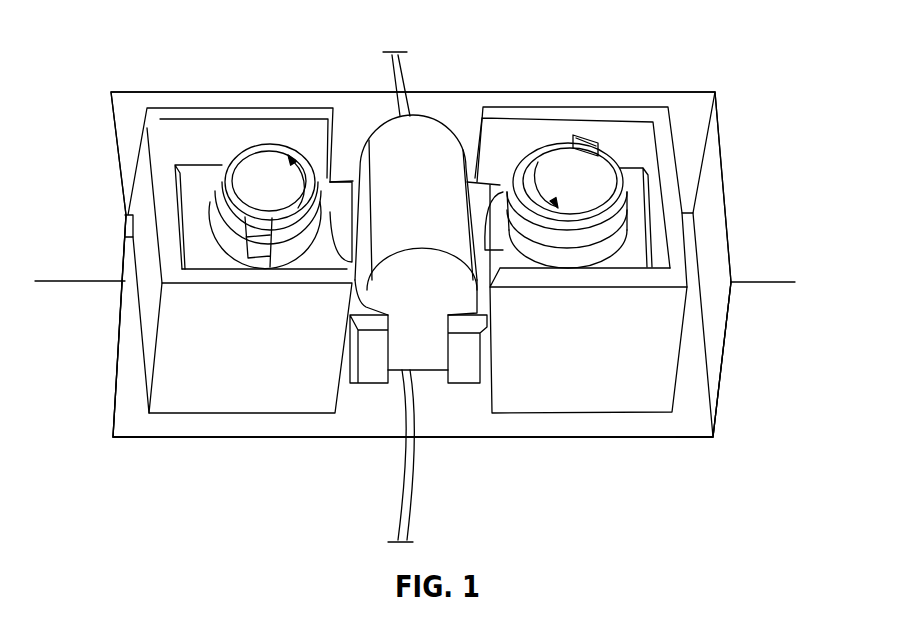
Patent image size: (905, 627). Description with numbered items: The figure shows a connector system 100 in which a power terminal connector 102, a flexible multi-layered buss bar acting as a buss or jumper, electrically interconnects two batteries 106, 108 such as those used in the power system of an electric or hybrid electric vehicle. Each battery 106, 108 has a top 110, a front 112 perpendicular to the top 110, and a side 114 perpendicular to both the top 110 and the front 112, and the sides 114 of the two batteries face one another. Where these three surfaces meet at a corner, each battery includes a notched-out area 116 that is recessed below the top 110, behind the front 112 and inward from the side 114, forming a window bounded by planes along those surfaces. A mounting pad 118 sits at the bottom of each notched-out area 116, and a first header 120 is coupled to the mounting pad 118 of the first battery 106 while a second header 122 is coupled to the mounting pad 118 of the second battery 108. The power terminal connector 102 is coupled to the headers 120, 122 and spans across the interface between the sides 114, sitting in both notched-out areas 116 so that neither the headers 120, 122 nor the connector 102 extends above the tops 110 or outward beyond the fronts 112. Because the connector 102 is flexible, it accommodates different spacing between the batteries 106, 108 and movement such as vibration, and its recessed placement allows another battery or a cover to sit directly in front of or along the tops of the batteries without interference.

The connector system 100 is at (533, 50).
The power terminal connector 102 is at (421, 152).
The first battery 106 is at (348, 108).
The second battery 108 is at (468, 110).
The top 110 is at (80, 265).
The front 112 is at (787, 351).
The side 114 is at (378, 33).
The notched-out area 116 is at (121, 428).
The mounting pad 118 is at (268, 430).
The first header 120 is at (204, 400).
The second header 122 is at (581, 400).